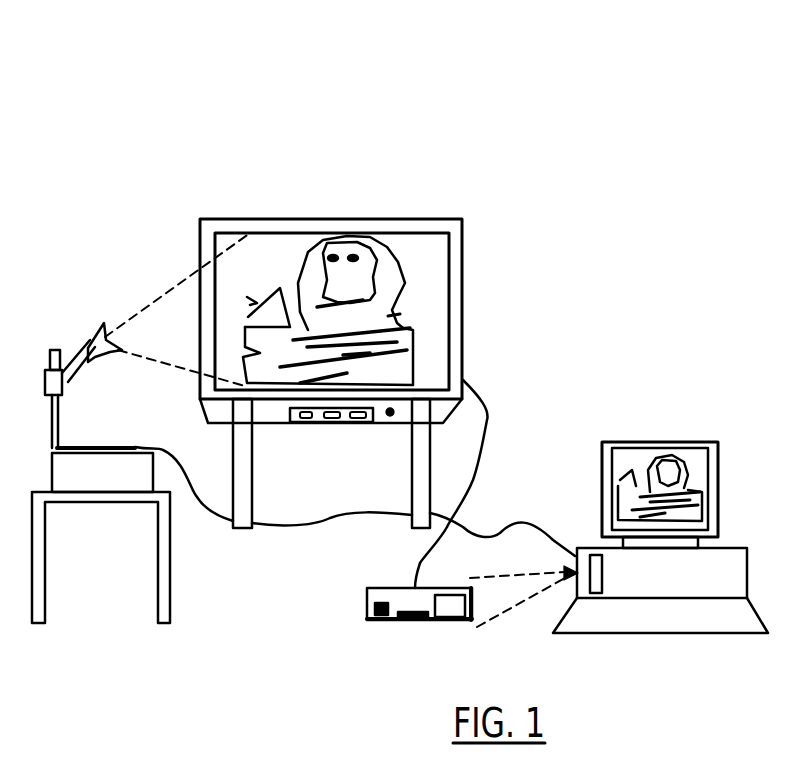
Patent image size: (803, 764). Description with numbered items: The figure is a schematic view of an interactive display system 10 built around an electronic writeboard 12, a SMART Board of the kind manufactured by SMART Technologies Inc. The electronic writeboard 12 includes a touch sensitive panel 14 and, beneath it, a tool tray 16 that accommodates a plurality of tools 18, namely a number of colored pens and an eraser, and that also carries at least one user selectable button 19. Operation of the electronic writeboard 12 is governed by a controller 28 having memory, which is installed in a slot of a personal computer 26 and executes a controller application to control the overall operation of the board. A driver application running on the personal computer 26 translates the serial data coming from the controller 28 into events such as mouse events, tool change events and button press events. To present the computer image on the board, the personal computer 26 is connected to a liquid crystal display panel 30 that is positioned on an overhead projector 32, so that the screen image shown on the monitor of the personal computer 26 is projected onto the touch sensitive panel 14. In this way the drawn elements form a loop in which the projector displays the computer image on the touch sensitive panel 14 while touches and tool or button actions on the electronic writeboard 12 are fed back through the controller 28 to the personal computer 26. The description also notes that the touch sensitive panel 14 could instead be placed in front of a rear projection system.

The interactive display system 10 is at (634, 122).
The electronic writeboard 12 is at (340, 206).
The touch sensitive panel 14 is at (433, 293).
The tool tray 16 is at (288, 411).
The tools 18 is at (318, 421).
The user selectable button 19 is at (390, 420).
The personal computer 26 is at (727, 558).
The controller 28 is at (370, 597).
The liquid crystal display panel 30 is at (112, 443).
The overhead projector 32 is at (45, 380).